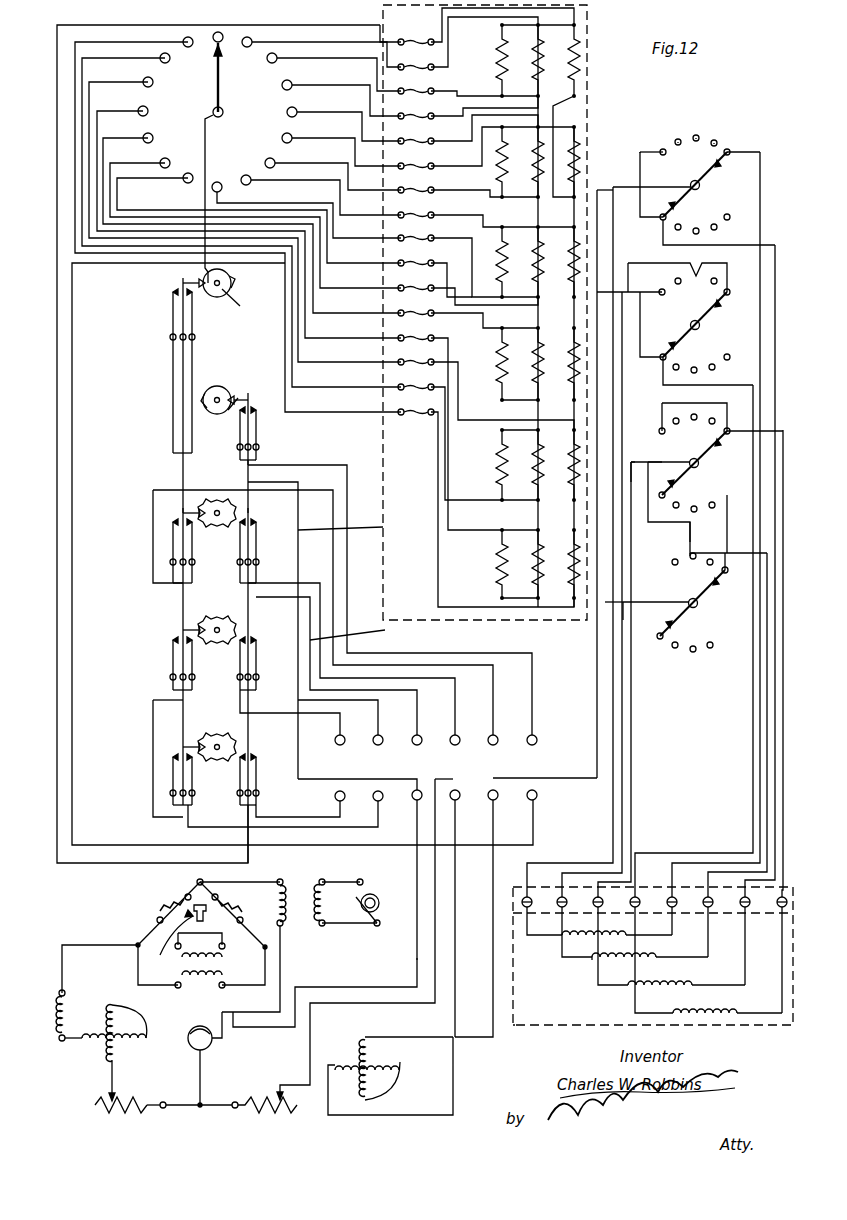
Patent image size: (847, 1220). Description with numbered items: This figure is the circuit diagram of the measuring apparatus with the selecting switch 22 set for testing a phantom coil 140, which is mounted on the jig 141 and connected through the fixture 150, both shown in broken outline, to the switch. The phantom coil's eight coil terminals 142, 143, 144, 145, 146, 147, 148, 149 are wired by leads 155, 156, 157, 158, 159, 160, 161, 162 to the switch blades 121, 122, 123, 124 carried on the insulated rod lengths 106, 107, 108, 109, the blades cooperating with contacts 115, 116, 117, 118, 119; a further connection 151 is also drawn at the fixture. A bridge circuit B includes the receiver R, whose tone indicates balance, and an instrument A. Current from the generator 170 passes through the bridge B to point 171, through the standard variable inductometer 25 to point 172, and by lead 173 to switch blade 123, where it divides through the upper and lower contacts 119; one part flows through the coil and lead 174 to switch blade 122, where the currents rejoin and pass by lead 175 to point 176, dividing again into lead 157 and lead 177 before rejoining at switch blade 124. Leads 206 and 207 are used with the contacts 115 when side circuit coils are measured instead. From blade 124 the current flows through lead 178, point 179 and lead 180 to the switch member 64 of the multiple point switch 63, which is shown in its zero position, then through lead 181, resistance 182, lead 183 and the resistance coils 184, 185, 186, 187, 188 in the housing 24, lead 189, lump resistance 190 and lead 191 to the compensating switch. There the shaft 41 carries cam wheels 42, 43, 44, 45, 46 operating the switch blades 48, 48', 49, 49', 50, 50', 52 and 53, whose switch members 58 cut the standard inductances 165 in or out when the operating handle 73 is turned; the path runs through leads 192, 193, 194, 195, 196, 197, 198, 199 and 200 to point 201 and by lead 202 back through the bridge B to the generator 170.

The lead 191 is at (317, 26).
The lead 180 is at (75, 598).
The lead 181 is at (100, 116).
The multiple point rotatable switch 63 is at (219, 116).
The rotatable switch member 64 is at (220, 75).
The operating handle 73 is at (212, 107).
The housing 24 is at (380, 447).
The lump resistance 190 is at (418, 36).
The lead 189 is at (483, 8).
The resistance coil 188 is at (580, 62).
The resistance coil 187 is at (580, 145).
The resistance coil 186 is at (570, 255).
The resistance coil 185 is at (572, 352).
The resistance coil 184 is at (535, 470).
The lead 183 is at (462, 418).
The resistance 182 is at (410, 344).
The lead 200 is at (359, 527).
The lead 196 is at (347, 635).
The lead 197 is at (201, 610).
The lead 193 is at (153, 730).
The lead 194 is at (206, 722).
The lead 195 is at (372, 712).
The lead 192 is at (372, 822).
The point 201 is at (412, 790).
The point 171 is at (457, 802).
The point 172 is at (494, 802).
The point 179 is at (535, 800).
The standard inductances 165 is at (500, 768).
The lead 173 is at (595, 676).
The lead 202 is at (415, 958).
The switch blade 53 is at (180, 287).
The cam wheel 46 is at (231, 277).
The rotatable shaft 41 is at (241, 349).
The switch blade 52 is at (252, 398).
The cam wheel 45 is at (225, 386).
The lead 198 is at (180, 476).
The lead 199 is at (203, 462).
The double throw switch blade 50 is at (179, 544).
The double throw switch blade 50' is at (262, 539).
The cam wheel 44 is at (233, 512).
The double throw switch blade 49 is at (177, 636).
The double throw switch blade 49' is at (259, 636).
The cam wheel 43 is at (211, 618).
The double throw switch blade 48 is at (177, 747).
The double throw switch blade 48' is at (260, 776).
The cam wheel 42 is at (211, 736).
The switch members 58 is at (195, 332).
The lead 178 is at (612, 200).
The lead 156 is at (622, 292).
The lead 157 is at (640, 768).
The lead 155 is at (612, 841).
The lead 158 is at (751, 746).
The lead 159 is at (761, 180).
The lead 160 is at (707, 867).
The lead 161 is at (776, 522).
The lead 162 is at (783, 815).
The rod length 109 is at (694, 190).
The switch blade 124 is at (705, 172).
The rod length 108 is at (675, 324).
The switch blade 123 is at (708, 310).
The lead 206 is at (640, 312).
The rod length 107 is at (707, 478).
The switch blade 122 is at (706, 450).
The lead 207 is at (668, 406).
The lead 175 is at (662, 456).
The point 176 is at (644, 452).
The lead 174 is at (695, 523).
The rod length 106 is at (674, 602).
The switch blade 121 is at (706, 590).
The lead 177 is at (641, 608).
The selecting switch 22 is at (700, 662).
The contacts 115 is at (660, 150).
The contact 116 is at (677, 139).
The upper contact 117 is at (695, 135).
The contact 118 is at (714, 140).
The contacts 119 is at (730, 151).
The fixture 150 is at (790, 886).
The coil terminal 142 is at (528, 940).
The coil terminal 143 is at (562, 950).
The coil terminal 144 is at (598, 924).
The coil terminal 145 is at (638, 924).
The coil terminal 146 is at (674, 924).
The coil terminal 147 is at (710, 940).
The coil terminal 148 is at (748, 948).
The coil terminal 149 is at (786, 948).
The phantom coil 140 is at (585, 968).
The jig 141 is at (524, 1018).
The conductor 151 is at (600, 880).
The generator 170 is at (375, 895).
The standard variable inductometer 25 is at (383, 1072).
The bridge circuit B is at (118, 928).
The receiver R is at (183, 946).
The ammeter A is at (200, 1038).